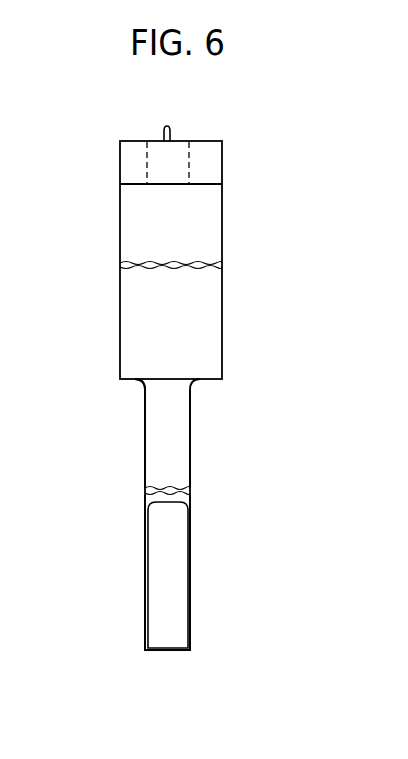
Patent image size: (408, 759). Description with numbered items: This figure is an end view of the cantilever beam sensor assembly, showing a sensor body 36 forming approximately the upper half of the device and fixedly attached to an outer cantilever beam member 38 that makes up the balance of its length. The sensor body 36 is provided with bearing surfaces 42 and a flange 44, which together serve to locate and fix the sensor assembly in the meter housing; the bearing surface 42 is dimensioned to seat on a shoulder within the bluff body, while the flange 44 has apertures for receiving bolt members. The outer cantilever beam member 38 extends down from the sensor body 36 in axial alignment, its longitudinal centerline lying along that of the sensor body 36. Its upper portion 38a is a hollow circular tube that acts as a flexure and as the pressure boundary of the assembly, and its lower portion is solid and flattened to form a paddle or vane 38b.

The sensor body 36 is at (237, 140).
The flange 44 is at (120, 162).
The bearing surface 42 is at (134, 381).
The outer cantilever beam member 38 is at (237, 652).
The upper portion of the outer beam member 38a is at (107, 380).
The paddle or vane 38b is at (107, 495).